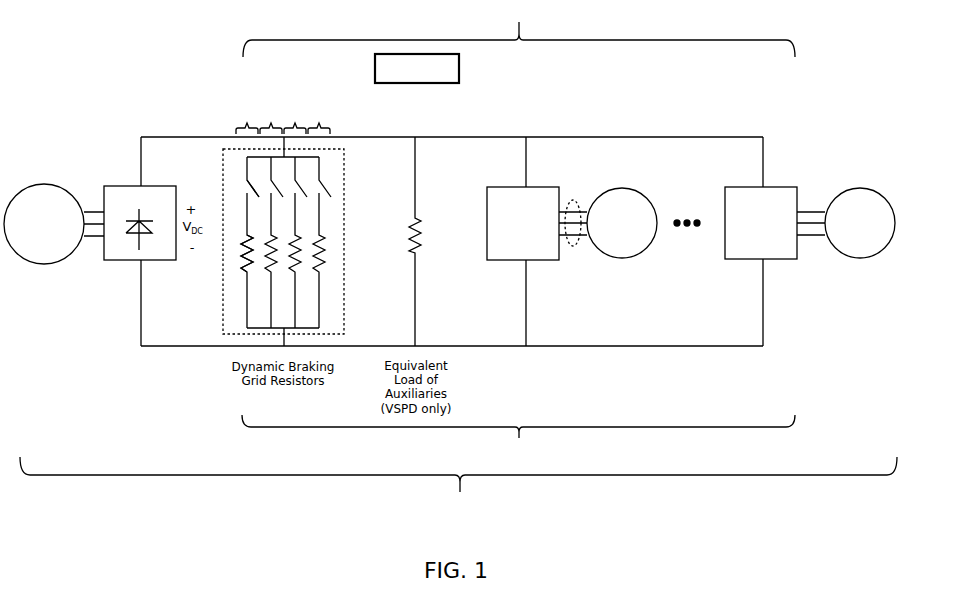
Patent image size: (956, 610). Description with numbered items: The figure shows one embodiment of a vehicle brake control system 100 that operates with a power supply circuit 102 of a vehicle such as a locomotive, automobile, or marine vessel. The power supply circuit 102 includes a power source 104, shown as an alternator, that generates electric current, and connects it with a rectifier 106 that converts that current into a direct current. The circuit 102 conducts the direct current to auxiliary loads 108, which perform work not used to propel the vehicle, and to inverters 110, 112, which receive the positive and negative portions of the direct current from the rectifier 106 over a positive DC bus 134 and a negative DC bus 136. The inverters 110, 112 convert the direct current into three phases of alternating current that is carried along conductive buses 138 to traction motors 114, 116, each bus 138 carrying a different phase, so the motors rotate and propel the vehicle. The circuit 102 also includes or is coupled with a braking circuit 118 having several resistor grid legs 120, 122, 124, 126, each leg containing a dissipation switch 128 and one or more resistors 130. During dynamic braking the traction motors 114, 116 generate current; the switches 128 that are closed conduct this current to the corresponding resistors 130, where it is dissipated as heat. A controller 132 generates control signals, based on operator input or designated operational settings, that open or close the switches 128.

The vehicle brake control system 100 is at (519, 28).
The power supply circuit 102 is at (458, 489).
The power source 104 is at (55, 184).
The rectifier 106 is at (114, 263).
The auxiliary loads 108 is at (404, 253).
The inverter 110 is at (498, 262).
The inverter 112 is at (737, 262).
The traction motor 114 is at (615, 258).
The traction motor 116 is at (846, 258).
The braking circuit 118 is at (518, 438).
The resistor grid leg 120 is at (245, 214).
The resistor grid leg 122 is at (272, 208).
The resistor grid leg 124 is at (296, 216).
The resistor grid leg 126 is at (320, 208).
The dissipation switch 128 is at (237, 183).
The resistor 130 is at (232, 259).
The controller 132 is at (449, 83).
The positive DC bus 134 is at (564, 136).
The negative DC bus 136 is at (583, 350).
The conductive bus 138 is at (573, 200).